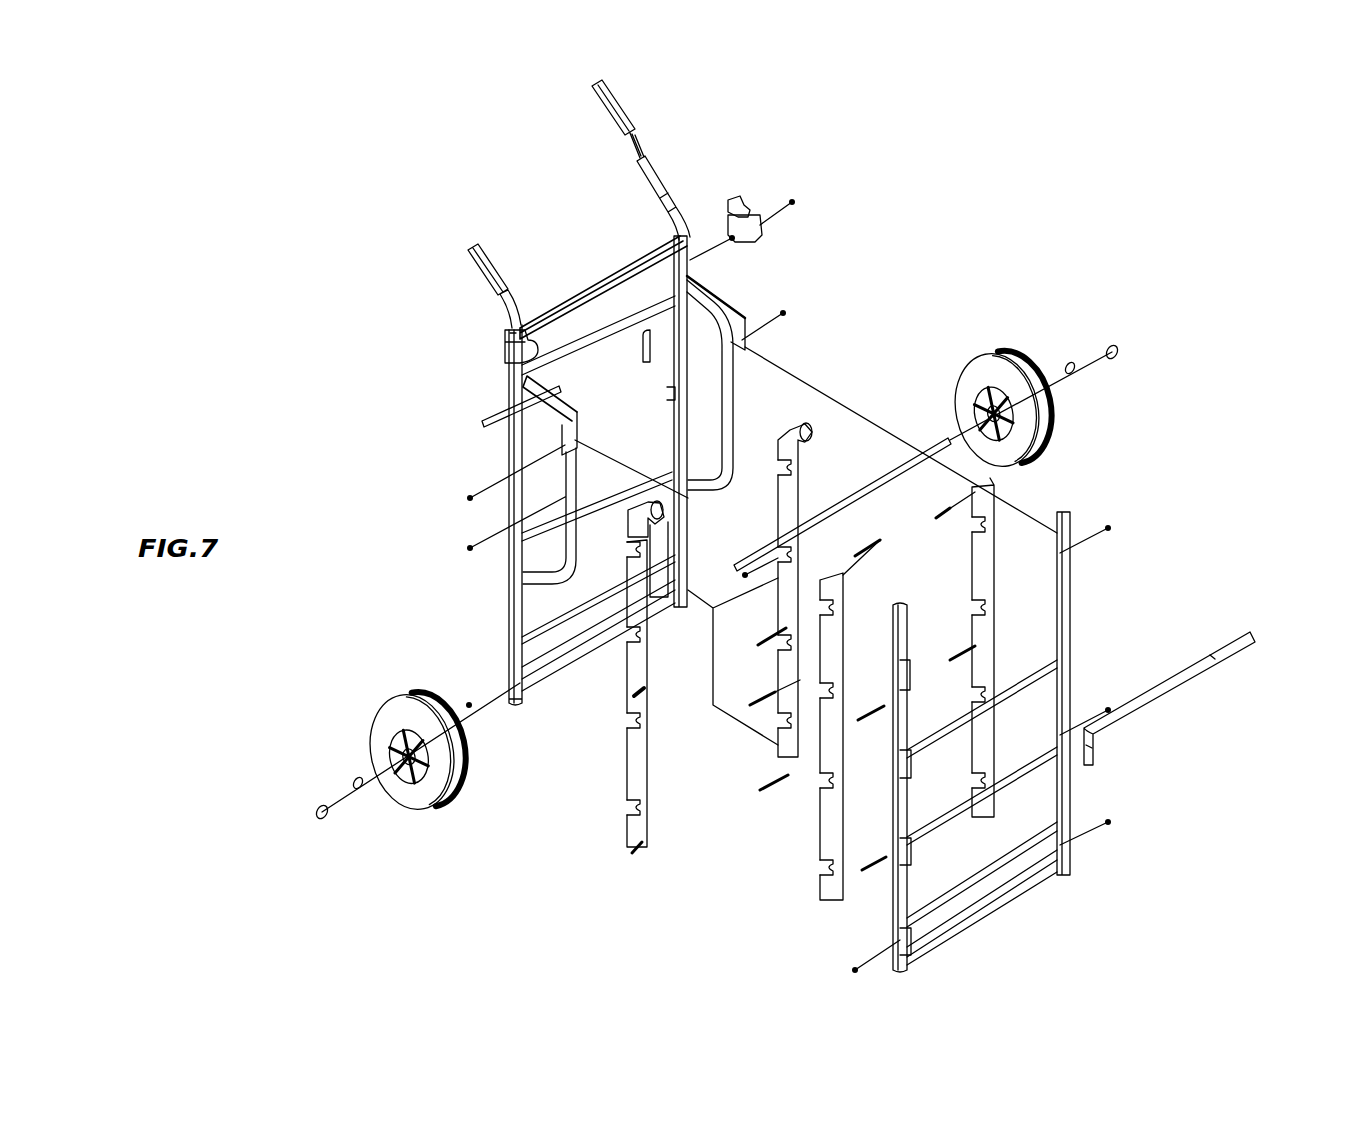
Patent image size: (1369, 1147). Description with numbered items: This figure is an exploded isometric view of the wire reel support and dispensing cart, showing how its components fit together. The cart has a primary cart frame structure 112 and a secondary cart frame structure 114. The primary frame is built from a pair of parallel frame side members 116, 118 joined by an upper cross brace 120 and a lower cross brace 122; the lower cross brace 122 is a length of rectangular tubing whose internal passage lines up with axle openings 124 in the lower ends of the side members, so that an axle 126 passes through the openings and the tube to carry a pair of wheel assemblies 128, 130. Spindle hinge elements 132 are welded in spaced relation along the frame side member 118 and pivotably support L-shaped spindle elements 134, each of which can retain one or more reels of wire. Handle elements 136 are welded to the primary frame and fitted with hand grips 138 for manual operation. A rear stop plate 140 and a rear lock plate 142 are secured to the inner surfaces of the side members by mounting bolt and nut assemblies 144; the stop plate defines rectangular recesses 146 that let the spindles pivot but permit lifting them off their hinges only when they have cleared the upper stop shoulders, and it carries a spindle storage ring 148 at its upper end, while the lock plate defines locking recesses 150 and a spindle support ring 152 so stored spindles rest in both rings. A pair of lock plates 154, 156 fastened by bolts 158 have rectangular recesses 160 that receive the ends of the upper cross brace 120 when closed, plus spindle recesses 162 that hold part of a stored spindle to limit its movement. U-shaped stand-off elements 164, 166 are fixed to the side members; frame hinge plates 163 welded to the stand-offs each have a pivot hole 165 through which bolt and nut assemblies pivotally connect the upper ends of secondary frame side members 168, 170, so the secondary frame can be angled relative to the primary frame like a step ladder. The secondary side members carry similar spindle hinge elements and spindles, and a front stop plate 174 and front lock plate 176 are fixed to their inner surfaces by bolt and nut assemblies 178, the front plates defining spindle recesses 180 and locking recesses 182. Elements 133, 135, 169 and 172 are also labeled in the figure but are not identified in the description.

The primary cart frame structure 112 is at (502, 578).
The secondary cart frame structure 114 is at (1090, 858).
The frame side member 116 is at (512, 622).
The frame side member 118 is at (690, 272).
The upper cross brace 120 is at (606, 276).
The lower cross brace 122 is at (573, 675).
The axle openings 124 is at (466, 702).
The axle 126 is at (862, 470).
The wheel assembly 128 is at (385, 722).
The wheel assembly 130 is at (1045, 445).
The spindle hinge elements 132 is at (650, 380).
The rod end 133 is at (1095, 750).
The spindle elements 134 is at (483, 420).
The rod segment 135 is at (1215, 660).
The handle elements 136 is at (647, 162).
The hand grips 138 is at (600, 106).
The rear stop plate 140 is at (800, 575).
The rear lock plate 142 is at (645, 760).
The mounting bolt and nut assemblies 144 is at (642, 852).
The rectangular recesses 146 is at (770, 640).
The spindle storage ring 148 is at (805, 435).
The locking recesses 150 is at (626, 718).
The spindle support ring 152 is at (667, 507).
The lock plate 154 is at (505, 330).
The lock plate 156 is at (760, 228).
The bolts 158 is at (510, 362).
The rectangular recesses 160 is at (730, 205).
The spindle recesses 162 is at (760, 216).
The frame hinge plates 163 is at (560, 424).
The stand-off element 164 is at (567, 497).
The pivot hole 165 is at (567, 443).
The stand-off element 166 is at (730, 370).
The secondary frame side member 168 is at (880, 935).
The bottom cross rail 169 is at (1010, 925).
The secondary frame side member 170 is at (1068, 780).
The upright tube 172 is at (896, 715).
The front stop plate 174 is at (840, 882).
The front lock plate 176 is at (985, 540).
The bolt and nut assemblies 178 is at (962, 660).
The spindle recesses 180 is at (830, 778).
The locking recesses 182 is at (990, 610).